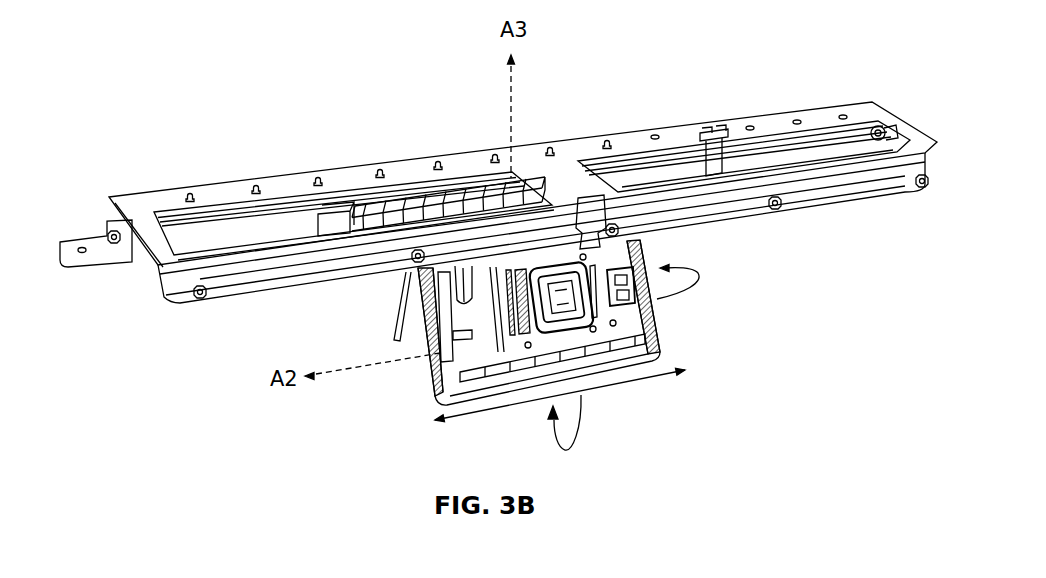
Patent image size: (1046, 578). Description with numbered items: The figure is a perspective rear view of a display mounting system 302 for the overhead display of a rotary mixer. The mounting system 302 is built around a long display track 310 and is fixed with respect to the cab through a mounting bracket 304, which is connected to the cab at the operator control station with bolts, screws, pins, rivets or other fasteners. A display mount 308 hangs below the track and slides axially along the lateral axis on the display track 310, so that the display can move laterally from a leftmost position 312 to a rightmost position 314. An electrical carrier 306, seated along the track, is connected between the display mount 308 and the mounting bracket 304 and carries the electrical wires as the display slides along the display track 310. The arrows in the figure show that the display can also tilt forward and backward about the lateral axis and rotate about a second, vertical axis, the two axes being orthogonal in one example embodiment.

The display mounting system 302 is at (893, 97).
The mounting bracket 304 is at (533, 150).
The electrical carrier 306 is at (362, 208).
The display mount 308 is at (517, 350).
The display track 310 is at (290, 205).
The leftmost position 312 is at (141, 299).
The rightmost position 314 is at (890, 216).